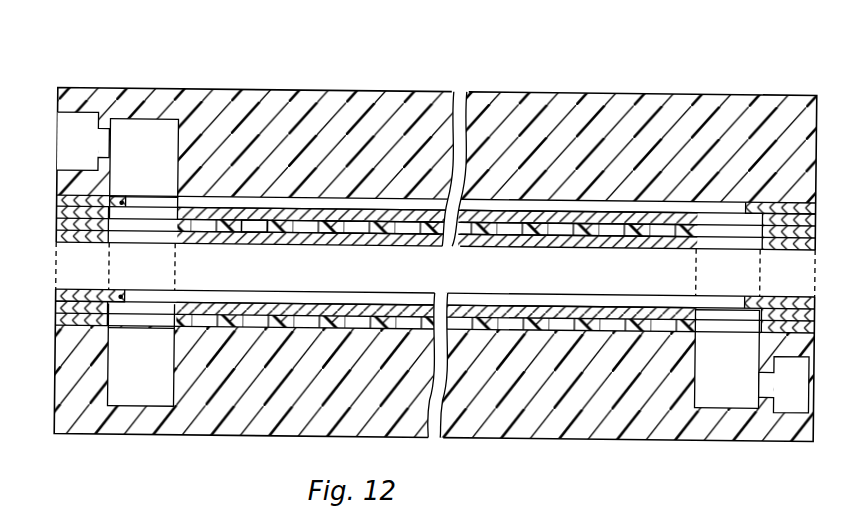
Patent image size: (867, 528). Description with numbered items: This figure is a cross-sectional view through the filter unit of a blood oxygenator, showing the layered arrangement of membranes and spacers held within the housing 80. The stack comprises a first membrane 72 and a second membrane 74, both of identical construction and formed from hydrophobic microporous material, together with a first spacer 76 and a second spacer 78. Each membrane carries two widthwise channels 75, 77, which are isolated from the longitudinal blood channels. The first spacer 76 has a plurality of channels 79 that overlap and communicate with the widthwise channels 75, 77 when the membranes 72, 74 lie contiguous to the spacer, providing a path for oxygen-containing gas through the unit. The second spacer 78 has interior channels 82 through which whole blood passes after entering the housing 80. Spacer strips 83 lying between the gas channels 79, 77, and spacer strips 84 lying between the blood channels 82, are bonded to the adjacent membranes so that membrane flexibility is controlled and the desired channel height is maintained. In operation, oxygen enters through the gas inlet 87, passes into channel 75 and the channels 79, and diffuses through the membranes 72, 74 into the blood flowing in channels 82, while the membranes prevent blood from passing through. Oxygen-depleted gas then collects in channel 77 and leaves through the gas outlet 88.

The first membrane 72 is at (478, 220).
The second membrane 74 is at (560, 220).
The widthwise channel 75 is at (704, 396).
The first spacer 76 is at (790, 200).
The widthwise channel 77 is at (176, 146).
The second spacer 78 is at (764, 247).
The channels of first spacer 79 is at (121, 301).
The housing 80 is at (661, 104).
The interior channels 82 is at (204, 222).
The spacer strips 83 is at (262, 222).
The spacer strips 84 is at (412, 222).
The gas inlet 87 is at (797, 365).
The gas outlet 88 is at (85, 170).